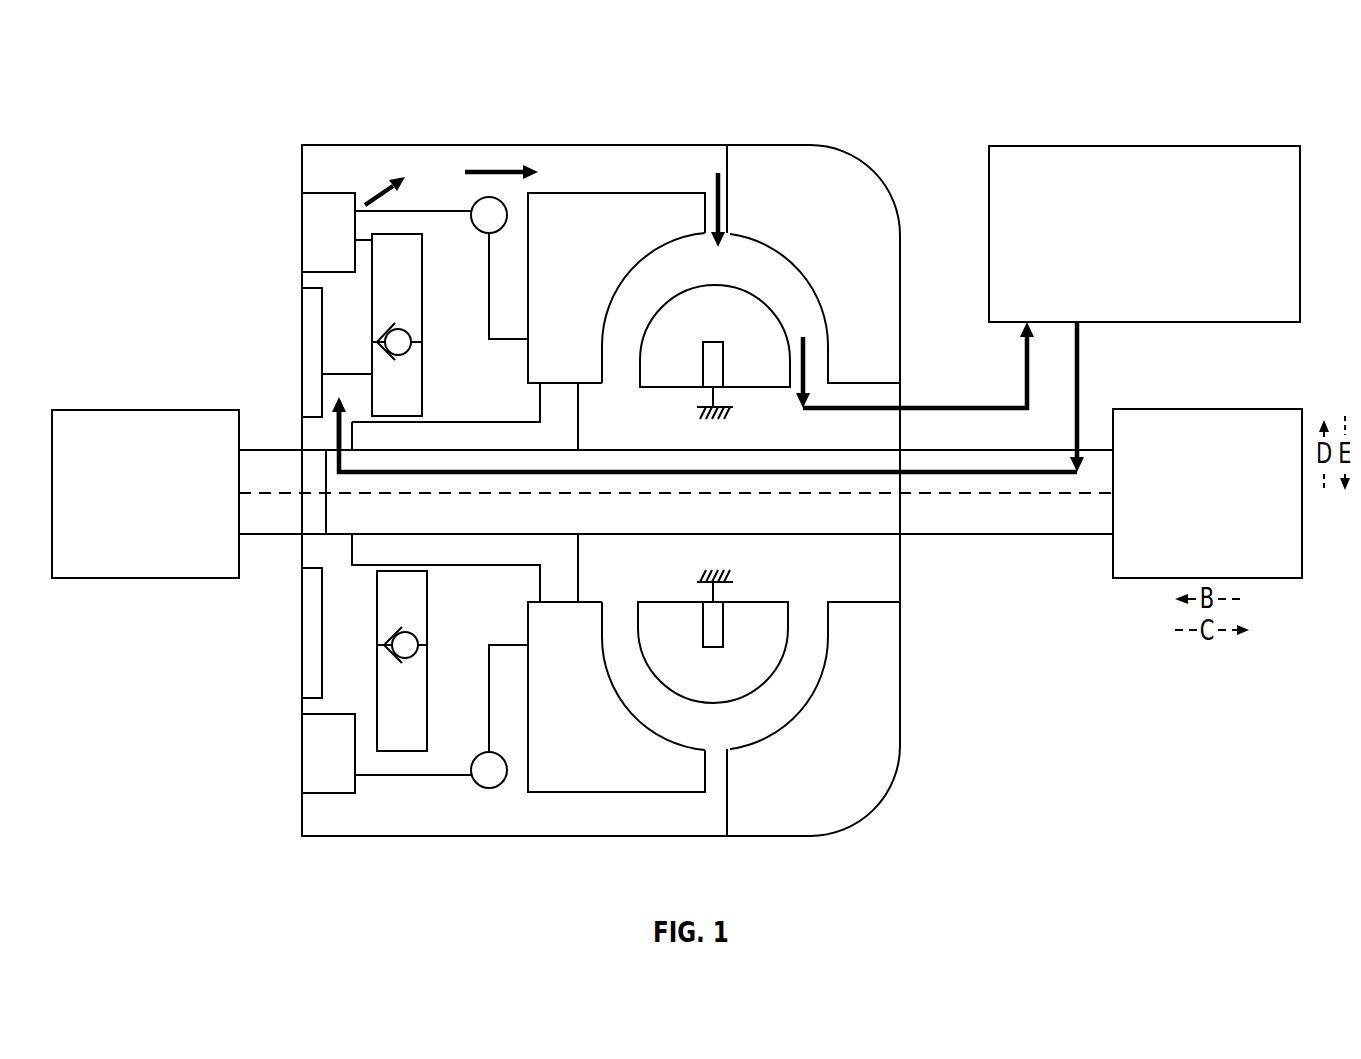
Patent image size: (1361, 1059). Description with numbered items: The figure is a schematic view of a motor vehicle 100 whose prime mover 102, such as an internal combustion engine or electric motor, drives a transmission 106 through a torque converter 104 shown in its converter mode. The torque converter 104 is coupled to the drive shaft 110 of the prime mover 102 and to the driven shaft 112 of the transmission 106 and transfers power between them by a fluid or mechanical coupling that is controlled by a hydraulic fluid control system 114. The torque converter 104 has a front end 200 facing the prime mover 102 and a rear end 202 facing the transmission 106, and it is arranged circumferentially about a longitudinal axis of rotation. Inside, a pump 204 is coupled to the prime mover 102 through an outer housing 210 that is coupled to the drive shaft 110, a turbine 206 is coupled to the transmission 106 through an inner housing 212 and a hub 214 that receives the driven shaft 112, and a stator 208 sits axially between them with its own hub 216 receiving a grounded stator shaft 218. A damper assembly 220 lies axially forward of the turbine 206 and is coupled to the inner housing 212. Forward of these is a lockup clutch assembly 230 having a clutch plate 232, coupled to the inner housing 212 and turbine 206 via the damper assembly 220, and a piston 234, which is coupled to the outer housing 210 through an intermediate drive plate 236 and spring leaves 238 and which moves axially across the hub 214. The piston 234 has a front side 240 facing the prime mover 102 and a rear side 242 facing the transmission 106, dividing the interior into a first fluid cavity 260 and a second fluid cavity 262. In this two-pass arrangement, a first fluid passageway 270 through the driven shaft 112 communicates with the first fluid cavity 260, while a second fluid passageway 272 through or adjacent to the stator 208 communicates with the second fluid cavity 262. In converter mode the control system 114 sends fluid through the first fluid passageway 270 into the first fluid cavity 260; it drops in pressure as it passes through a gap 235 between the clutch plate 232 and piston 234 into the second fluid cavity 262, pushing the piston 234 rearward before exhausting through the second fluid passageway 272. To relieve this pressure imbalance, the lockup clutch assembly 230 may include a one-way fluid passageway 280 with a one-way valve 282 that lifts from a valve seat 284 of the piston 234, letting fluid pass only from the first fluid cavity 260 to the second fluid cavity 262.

The motor vehicle 100 is at (275, 98).
The prime mover 102 is at (126, 527).
The torque converter 104 is at (475, 120).
The transmission 106 is at (1188, 528).
The drive shaft 110 is at (270, 534).
The driven shaft 112 is at (1057, 535).
The hydraulic fluid control system 114 is at (1126, 288).
The front end 200 is at (265, 798).
The rear end 202 is at (930, 785).
The pump 204 is at (792, 305).
The turbine 206 is at (640, 310).
The stator 208 is at (720, 342).
The outer housing 210 is at (752, 145).
The inner housing 212 is at (598, 193).
The hub 214 is at (578, 407).
The hub 216 is at (703, 378).
The grounded stator shaft 218 is at (715, 400).
The damper assembly 220 is at (485, 235).
The lockup clutch assembly 230 is at (288, 248).
The clutch plate 232 is at (313, 192).
The piston 234 is at (422, 368).
The gap 235 is at (355, 235).
The intermediate drive plate 236 is at (300, 432).
The spring leaves 238 is at (337, 373).
The front side 240 is at (377, 702).
The rear side 242 is at (427, 705).
The first fluid cavity 260 is at (333, 310).
The second fluid cavity 262 is at (375, 157).
The first fluid passageway 270 is at (1077, 360).
The second fluid passageway 272 is at (1027, 378).
The one-way fluid passageway 280 is at (356, 675).
The one-way valve 282 is at (427, 640).
The valve seat 284 is at (390, 637).